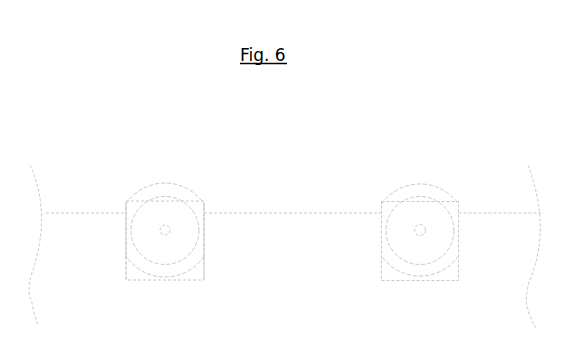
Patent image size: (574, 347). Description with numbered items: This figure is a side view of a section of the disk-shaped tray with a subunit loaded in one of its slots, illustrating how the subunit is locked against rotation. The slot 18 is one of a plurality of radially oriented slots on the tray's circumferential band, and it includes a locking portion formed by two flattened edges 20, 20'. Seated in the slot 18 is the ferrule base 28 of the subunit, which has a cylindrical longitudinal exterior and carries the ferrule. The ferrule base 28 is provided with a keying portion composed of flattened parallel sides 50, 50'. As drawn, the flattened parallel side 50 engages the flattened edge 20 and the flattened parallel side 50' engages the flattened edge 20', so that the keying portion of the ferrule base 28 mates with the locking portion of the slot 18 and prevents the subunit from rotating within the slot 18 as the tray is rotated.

The slot 18 is at (197, 273).
The flattened edge 20 is at (93, 264).
The flattened edge 20' is at (236, 261).
The ferrule base 28 is at (172, 270).
The flattened parallel side 50 is at (114, 201).
The flattened parallel side 50' is at (214, 207).